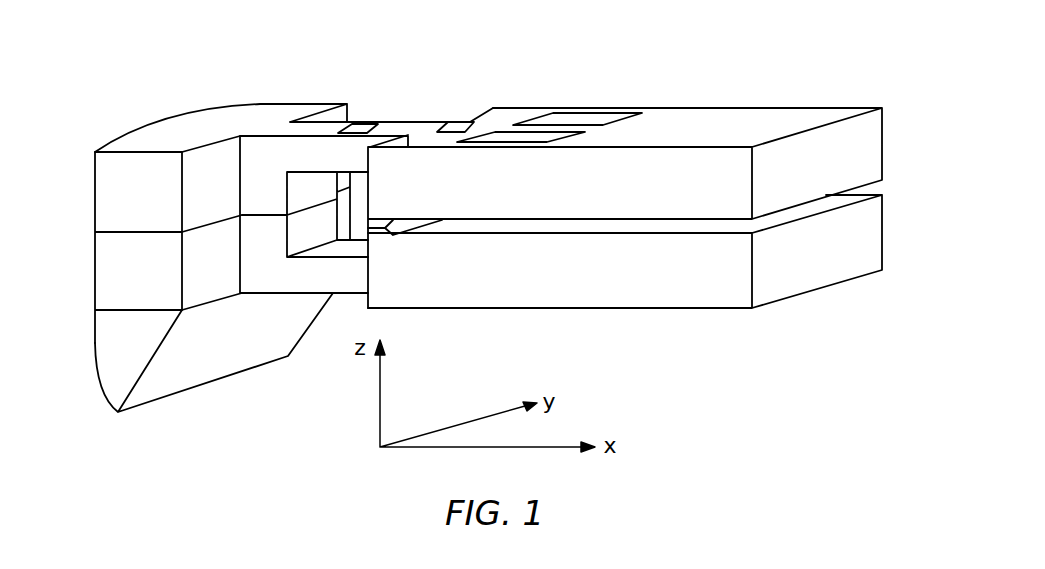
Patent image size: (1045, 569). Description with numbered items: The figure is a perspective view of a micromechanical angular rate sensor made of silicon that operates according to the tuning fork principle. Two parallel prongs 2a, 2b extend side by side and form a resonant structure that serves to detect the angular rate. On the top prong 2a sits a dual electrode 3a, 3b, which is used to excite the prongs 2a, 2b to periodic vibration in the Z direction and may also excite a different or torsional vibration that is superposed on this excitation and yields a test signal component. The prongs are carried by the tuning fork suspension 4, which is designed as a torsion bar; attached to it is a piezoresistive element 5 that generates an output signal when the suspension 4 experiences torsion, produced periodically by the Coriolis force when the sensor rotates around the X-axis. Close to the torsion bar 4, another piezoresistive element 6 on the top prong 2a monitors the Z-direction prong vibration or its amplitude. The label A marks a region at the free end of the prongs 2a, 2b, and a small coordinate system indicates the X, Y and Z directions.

The top prong 2a is at (740, 125).
The prong 2b is at (688, 287).
The dual electrode 3a is at (515, 133).
The dual electrode 3b is at (563, 119).
The tuning fork suspension 4 is at (297, 150).
The piezoresistive element 5 is at (362, 125).
The piezoresistive element 6 is at (457, 122).
The direction A is at (941, 214).